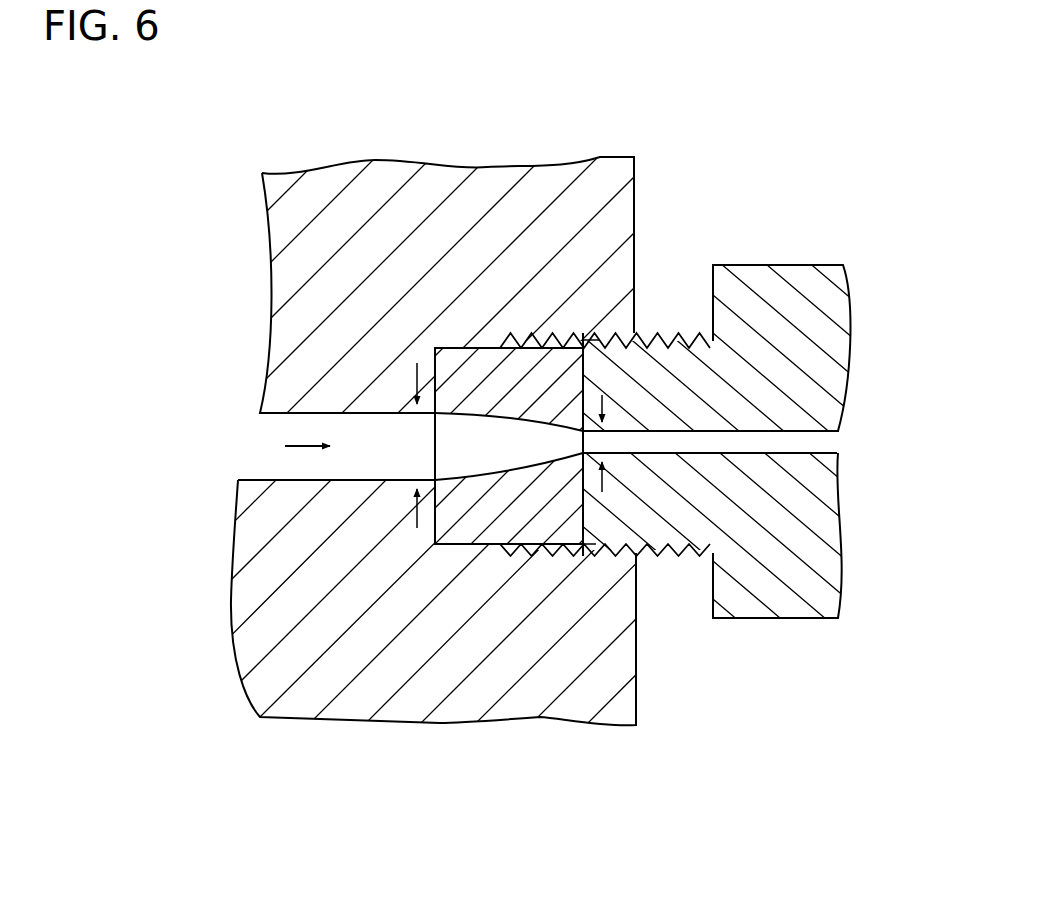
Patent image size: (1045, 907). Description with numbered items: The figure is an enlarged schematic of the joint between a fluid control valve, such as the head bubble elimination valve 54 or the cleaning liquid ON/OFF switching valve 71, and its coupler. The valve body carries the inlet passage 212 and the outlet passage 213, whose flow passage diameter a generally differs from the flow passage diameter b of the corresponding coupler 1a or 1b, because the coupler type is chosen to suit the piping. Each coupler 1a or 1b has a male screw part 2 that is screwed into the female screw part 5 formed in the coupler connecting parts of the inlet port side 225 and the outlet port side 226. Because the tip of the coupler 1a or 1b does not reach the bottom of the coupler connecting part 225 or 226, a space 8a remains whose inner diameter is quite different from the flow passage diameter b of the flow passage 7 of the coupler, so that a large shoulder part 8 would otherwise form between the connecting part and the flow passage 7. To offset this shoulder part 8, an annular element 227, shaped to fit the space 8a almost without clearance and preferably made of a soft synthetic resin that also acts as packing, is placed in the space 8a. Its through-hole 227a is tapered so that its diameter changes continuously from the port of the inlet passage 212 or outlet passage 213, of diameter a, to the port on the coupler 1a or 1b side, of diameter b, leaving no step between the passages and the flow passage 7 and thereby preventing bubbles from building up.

The head bubble elimination valve 54 is at (448, 404).
The cleaning liquid ON/OFF switching valve 71 is at (377, 185).
The inlet passage 212 is at (222, 359).
The outlet passage 213 is at (313, 407).
The shoulder part 8 is at (583, 380).
The space 8a is at (499, 544).
The through-hole 227a is at (475, 412).
The annular element 227 is at (534, 368).
The coupler connecting part of the inlet port side 225 is at (692, 249).
The coupler connecting part of the outlet port side 226 is at (592, 320).
The coupler 1a is at (737, 425).
The coupler 1b is at (821, 257).
The male screw part 2 is at (653, 333).
The flow passage 7 is at (790, 416).
The female screw part 5 is at (584, 520).